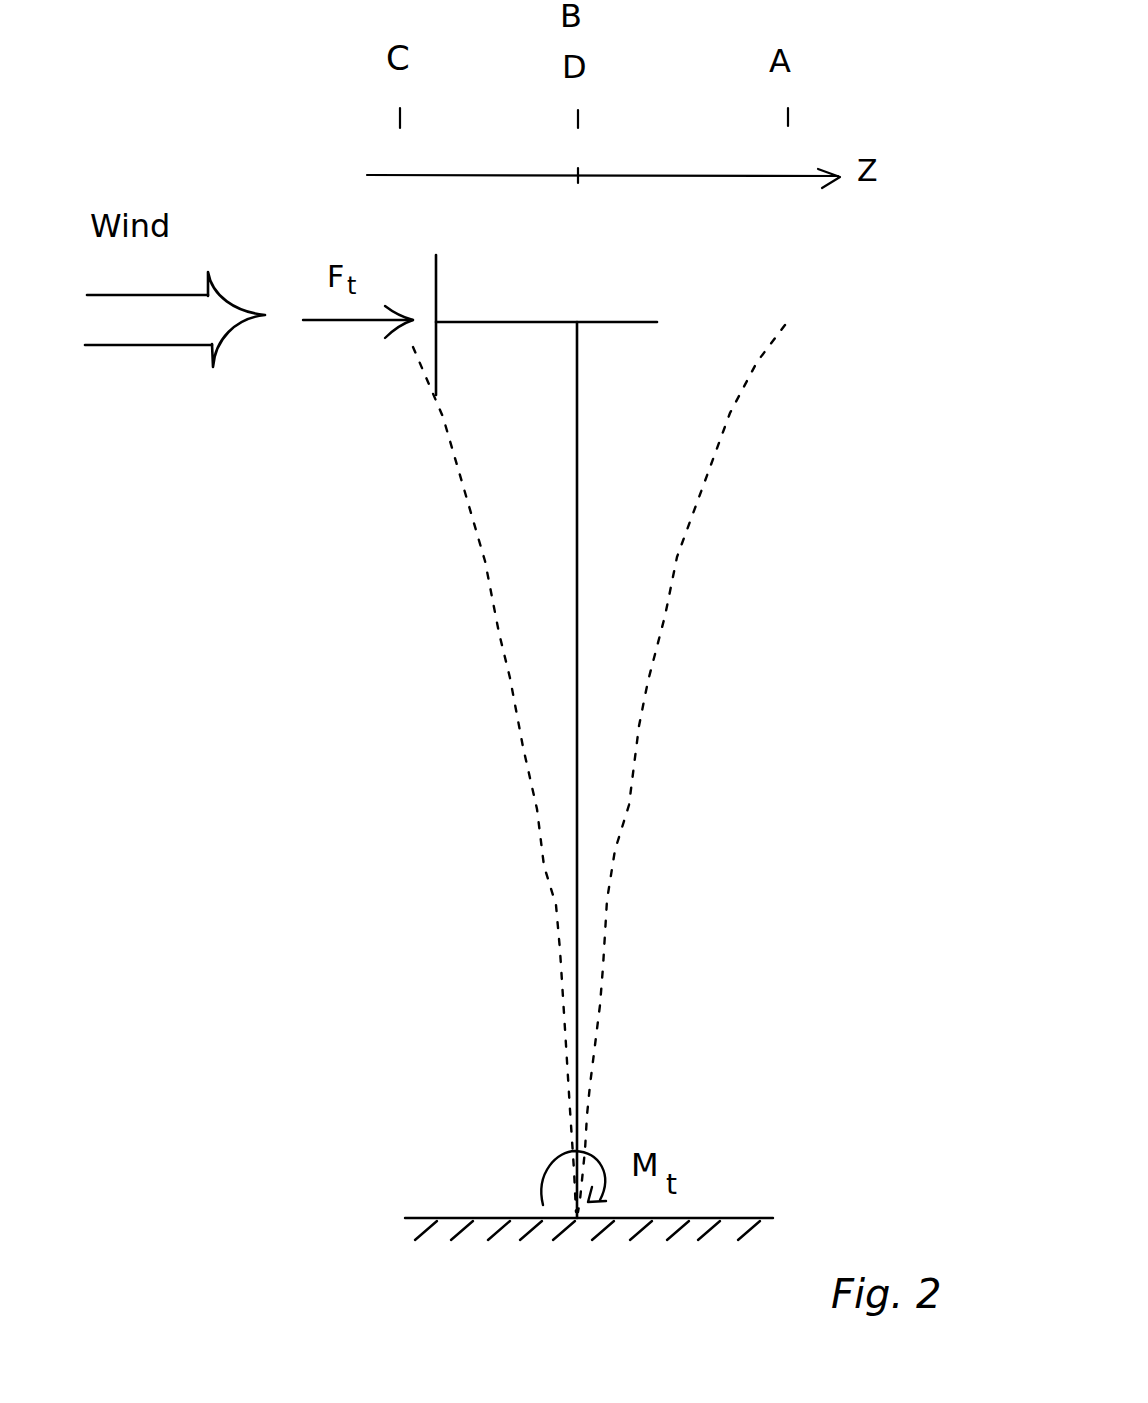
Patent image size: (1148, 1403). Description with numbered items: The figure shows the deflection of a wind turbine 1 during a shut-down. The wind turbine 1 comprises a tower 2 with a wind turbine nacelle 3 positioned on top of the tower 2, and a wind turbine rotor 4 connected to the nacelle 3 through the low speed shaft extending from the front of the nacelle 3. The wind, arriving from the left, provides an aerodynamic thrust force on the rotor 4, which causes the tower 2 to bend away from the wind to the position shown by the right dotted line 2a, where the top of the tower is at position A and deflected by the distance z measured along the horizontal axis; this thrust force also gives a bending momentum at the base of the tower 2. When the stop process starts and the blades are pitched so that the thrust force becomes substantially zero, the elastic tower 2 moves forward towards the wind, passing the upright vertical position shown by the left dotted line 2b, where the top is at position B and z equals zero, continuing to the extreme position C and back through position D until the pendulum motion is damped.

The wind turbine 1 is at (361, 564).
The tower 2 is at (577, 880).
The right dotted line 2a is at (656, 652).
The left dotted line 2b is at (511, 688).
The wind turbine nacelle 3 is at (555, 320).
The wind turbine rotor 4 is at (439, 285).